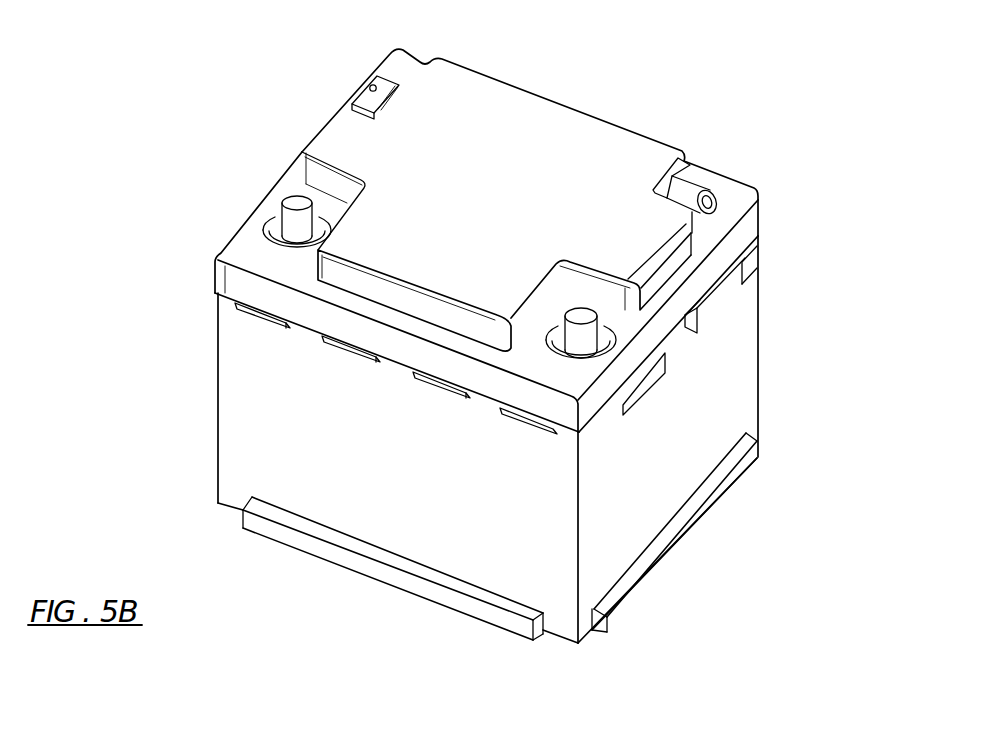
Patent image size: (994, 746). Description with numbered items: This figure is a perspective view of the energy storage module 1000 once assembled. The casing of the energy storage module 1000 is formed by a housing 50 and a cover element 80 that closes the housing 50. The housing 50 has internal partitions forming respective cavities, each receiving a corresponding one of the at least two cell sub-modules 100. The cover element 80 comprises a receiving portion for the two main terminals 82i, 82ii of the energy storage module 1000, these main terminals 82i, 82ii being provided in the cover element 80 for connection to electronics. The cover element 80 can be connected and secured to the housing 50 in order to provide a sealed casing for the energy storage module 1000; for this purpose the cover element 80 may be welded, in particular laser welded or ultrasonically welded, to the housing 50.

The energy storage module 1000 is at (146, 190).
The cell sub-module 100 is at (421, 0).
The cover element 80 is at (633, 100).
The housing 50 is at (778, 371).
The main terminal 82i is at (297, 205).
The main terminal 82ii is at (581, 313).